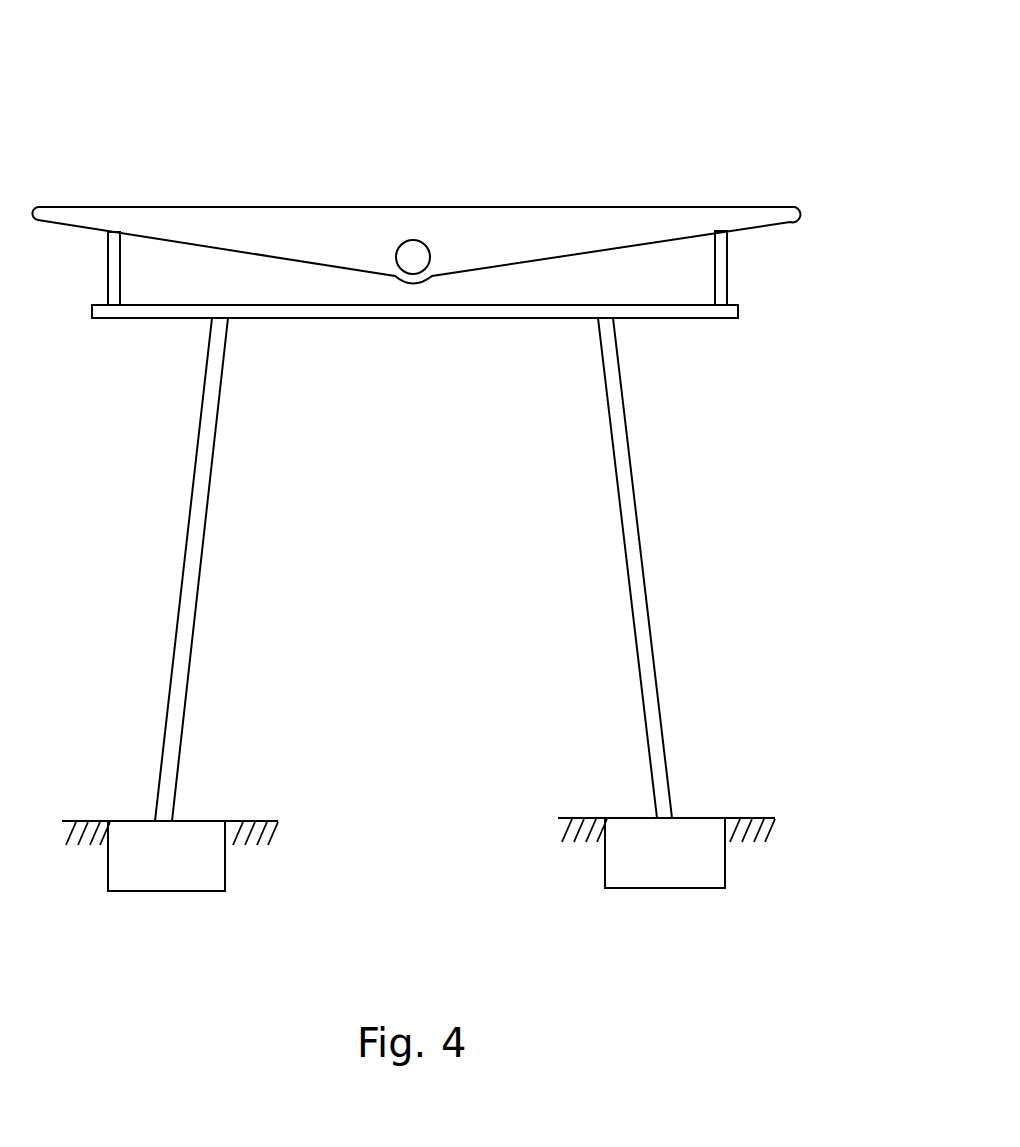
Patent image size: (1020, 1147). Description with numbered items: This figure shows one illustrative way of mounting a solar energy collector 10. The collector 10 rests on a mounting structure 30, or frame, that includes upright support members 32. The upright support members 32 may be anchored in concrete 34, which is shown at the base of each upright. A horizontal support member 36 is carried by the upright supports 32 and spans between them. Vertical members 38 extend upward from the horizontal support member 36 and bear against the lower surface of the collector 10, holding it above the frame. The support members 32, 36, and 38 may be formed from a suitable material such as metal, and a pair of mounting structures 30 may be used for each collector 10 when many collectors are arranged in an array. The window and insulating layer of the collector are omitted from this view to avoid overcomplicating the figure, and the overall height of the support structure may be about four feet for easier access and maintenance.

The mounting structure 30 is at (648, 120).
The solar energy collector 10 is at (488, 240).
The vertical members 38 is at (120, 279).
The horizontal support member 36 is at (496, 318).
The upright support members 32 is at (202, 556).
The concrete 34 is at (198, 820).